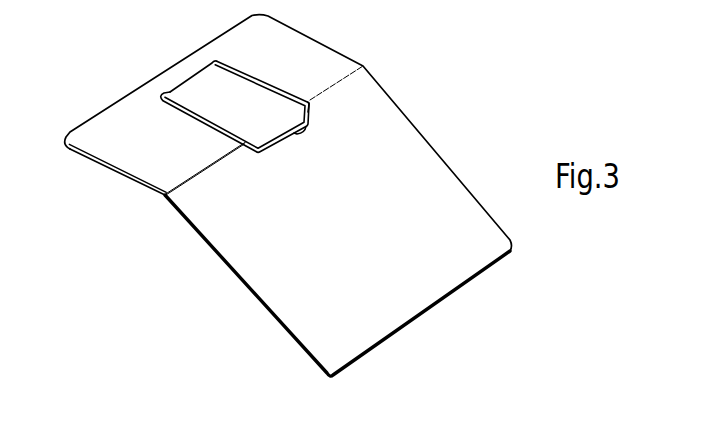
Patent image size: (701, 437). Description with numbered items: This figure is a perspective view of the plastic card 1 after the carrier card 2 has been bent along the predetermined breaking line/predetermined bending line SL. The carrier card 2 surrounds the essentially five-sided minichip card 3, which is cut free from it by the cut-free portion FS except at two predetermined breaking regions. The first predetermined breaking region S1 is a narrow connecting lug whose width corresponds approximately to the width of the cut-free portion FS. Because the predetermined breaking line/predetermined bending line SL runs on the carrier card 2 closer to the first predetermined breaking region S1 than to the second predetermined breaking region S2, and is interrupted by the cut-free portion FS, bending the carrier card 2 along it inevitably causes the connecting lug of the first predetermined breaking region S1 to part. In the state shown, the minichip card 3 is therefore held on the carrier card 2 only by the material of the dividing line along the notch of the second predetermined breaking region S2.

The plastic card 1 is at (279, 196).
The carrier card 2 is at (288, 196).
The minichip card 3 is at (258, 113).
The first predetermined breaking region S1 is at (300, 134).
The second predetermined breaking region S2 is at (198, 77).
The predetermined breaking line/predetermined bending line SL is at (197, 177).
The cut-free portion FS is at (313, 113).